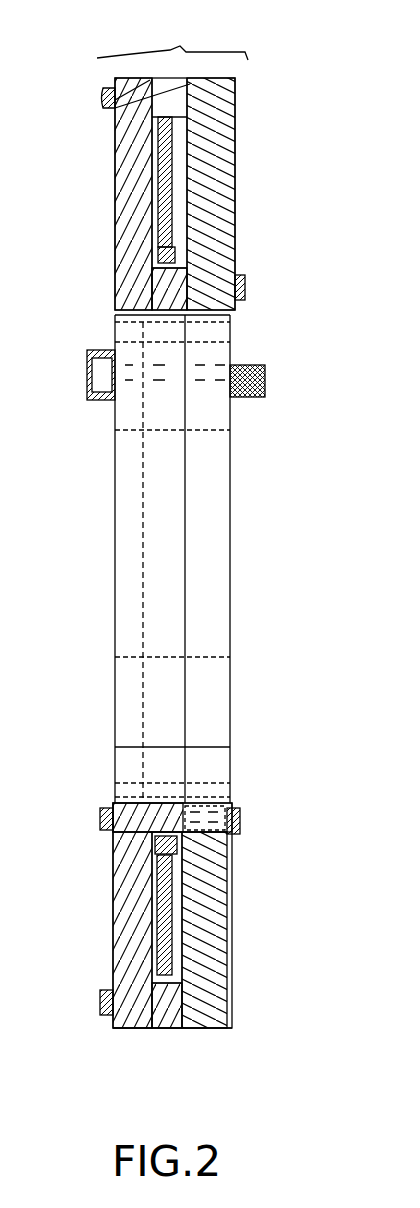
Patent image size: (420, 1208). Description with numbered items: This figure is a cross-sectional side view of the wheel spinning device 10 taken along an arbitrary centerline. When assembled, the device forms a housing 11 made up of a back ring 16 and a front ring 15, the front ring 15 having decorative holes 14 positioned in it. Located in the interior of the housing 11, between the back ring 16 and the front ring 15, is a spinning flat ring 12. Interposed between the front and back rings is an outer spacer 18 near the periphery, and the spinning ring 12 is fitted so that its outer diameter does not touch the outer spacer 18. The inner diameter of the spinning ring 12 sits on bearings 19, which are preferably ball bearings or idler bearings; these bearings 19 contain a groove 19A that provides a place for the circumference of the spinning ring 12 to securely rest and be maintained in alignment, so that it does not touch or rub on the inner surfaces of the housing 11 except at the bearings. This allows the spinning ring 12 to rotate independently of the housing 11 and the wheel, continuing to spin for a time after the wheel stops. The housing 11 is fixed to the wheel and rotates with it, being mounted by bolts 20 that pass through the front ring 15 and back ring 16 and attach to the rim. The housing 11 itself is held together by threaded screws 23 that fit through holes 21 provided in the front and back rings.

The spinning device 10 is at (297, 104).
The housing 11 is at (183, 48).
The spinning flat ring 12 is at (227, 968).
The decorative holes 14 is at (114, 430).
The front ring 15 is at (114, 554).
The back ring 16 is at (231, 722).
The outer spacer 18 is at (170, 1030).
The bearings 19 is at (233, 836).
The groove 19A is at (224, 907).
The bolts 20 is at (250, 362).
The holes 21 is at (126, 1024).
The threaded screws 23 is at (100, 997).